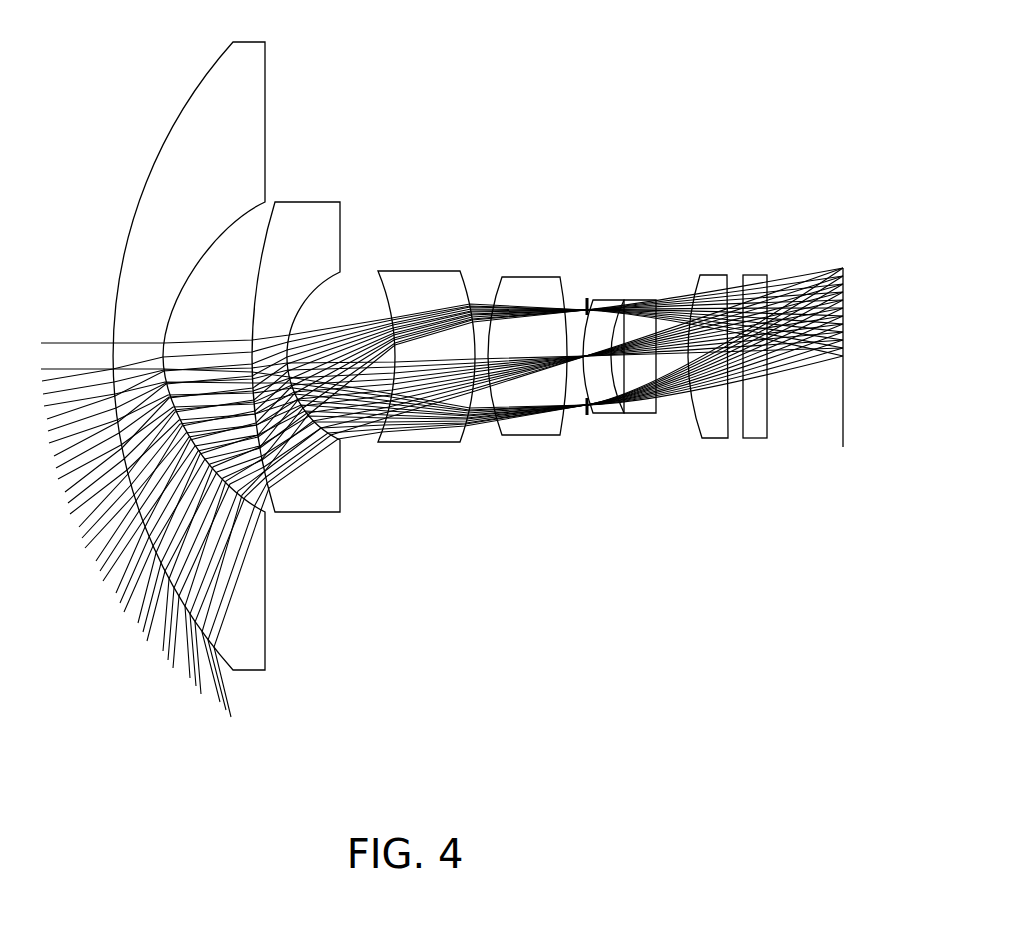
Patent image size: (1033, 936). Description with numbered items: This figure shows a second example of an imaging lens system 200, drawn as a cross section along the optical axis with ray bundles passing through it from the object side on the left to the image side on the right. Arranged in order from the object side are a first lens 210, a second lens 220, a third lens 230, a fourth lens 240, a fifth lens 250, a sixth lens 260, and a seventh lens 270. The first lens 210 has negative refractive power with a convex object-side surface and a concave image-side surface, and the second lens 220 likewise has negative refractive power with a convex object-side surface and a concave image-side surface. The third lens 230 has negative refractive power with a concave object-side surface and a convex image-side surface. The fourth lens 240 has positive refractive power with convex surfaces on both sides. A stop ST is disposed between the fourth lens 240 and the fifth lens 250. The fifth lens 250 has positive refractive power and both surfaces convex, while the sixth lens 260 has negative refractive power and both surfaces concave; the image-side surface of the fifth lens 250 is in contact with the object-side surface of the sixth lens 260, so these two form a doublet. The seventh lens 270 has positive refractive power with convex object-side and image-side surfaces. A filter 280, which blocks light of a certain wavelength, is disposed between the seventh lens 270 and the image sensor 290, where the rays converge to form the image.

The imaging lens system 200 is at (524, 116).
The first lens 210 is at (245, 666).
The second lens 220 is at (315, 500).
The third lens 230 is at (427, 437).
The fourth lens 240 is at (533, 433).
The fifth lens 250 is at (602, 414).
The sixth lens 260 is at (635, 414).
The seventh lens 270 is at (717, 439).
The filter 280 is at (755, 439).
The image sensor 290 is at (843, 448).
The stop ST is at (586, 299).